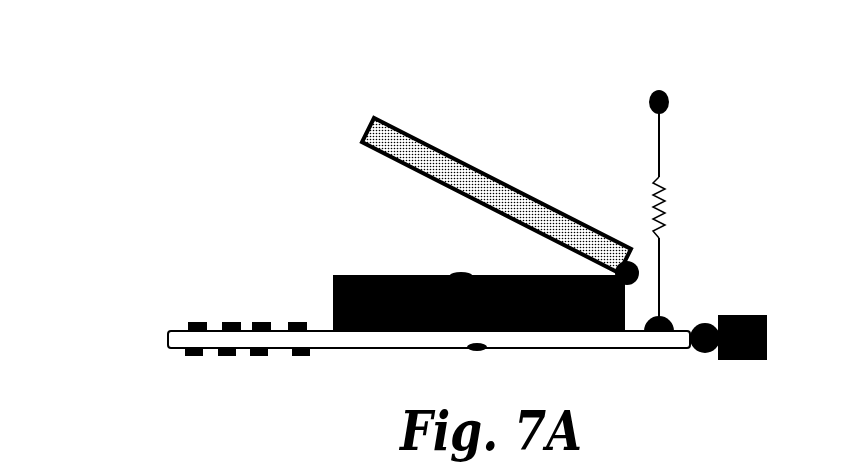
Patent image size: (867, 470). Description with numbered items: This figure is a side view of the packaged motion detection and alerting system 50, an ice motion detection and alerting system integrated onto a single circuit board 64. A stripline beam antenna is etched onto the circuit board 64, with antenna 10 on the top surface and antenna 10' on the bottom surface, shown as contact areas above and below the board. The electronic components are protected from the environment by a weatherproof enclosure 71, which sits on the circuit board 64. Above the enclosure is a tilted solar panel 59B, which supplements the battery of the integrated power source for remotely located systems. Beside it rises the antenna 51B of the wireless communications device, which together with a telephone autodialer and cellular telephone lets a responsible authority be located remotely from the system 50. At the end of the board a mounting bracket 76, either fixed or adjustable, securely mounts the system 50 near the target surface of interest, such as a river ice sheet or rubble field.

The motion detection and alerting system 50 is at (90, 110).
The circuit board 64 is at (167, 331).
The antenna 10 is at (247, 242).
The antenna 10' is at (247, 395).
The weatherproof enclosure 71 is at (448, 276).
The solar panel 59B is at (415, 135).
The antenna 51B is at (650, 205).
The mounting bracket 76 is at (745, 313).